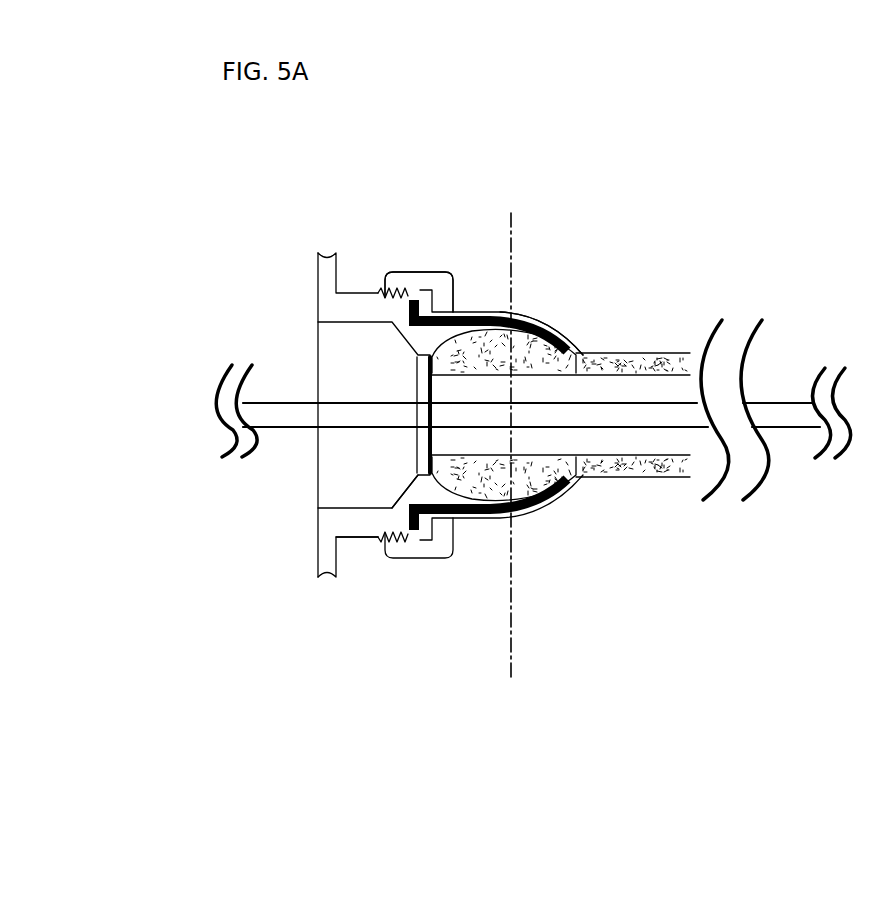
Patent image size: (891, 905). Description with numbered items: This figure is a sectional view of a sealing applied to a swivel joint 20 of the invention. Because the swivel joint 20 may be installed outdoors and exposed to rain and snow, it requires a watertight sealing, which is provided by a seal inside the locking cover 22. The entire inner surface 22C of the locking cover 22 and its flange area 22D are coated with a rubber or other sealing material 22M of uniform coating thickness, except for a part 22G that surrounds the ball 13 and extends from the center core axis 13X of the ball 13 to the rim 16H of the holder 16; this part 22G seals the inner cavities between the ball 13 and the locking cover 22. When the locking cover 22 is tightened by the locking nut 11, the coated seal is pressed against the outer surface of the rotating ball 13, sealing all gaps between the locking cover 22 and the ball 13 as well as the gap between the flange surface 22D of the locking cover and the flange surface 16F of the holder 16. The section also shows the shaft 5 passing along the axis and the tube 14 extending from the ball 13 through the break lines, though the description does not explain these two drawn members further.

The wire harness / cable 5 is at (772, 405).
The locking nut 11 is at (390, 278).
The ball 13 is at (522, 487).
The center core axis 13X is at (506, 462).
The tube / pipe 14 is at (653, 353).
The holder 16 is at (333, 340).
The rim 16H is at (450, 495).
The flange surface 16F is at (403, 515).
The swivel joint 20 is at (768, 216).
The locking cover 22 is at (528, 312).
The inner surface 22C is at (550, 330).
The flange area 22D is at (414, 278).
The part surrounding the ball 22G is at (460, 498).
The sealing material 22M is at (425, 276).